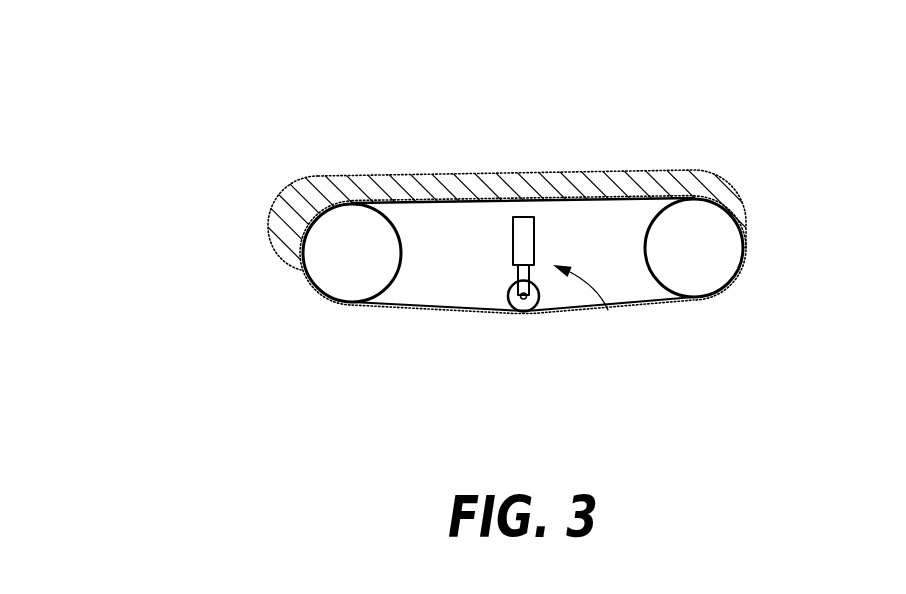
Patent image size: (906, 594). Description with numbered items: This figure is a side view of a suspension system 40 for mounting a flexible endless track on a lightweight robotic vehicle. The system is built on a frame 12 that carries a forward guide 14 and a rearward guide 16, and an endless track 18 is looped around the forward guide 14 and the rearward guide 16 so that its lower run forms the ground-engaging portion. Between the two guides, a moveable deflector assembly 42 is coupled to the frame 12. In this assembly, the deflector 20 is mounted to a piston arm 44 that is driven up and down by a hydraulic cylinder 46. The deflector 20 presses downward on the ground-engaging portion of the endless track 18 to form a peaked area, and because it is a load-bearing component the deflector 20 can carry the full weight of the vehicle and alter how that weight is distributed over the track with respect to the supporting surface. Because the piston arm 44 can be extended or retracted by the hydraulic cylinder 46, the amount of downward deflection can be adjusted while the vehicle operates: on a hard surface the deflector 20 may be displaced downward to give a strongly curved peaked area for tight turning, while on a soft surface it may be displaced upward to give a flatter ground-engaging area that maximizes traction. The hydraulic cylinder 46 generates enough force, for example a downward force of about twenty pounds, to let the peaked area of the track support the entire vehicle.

The suspension system 40 is at (150, 55).
The frame 12 is at (420, 215).
The endless track 18 is at (643, 177).
The forward guide 14 is at (330, 273).
The rearward guide 16 is at (712, 268).
The deflector 20 is at (516, 301).
The piston arm 44 is at (523, 270).
The hydraulic cylinder 46 is at (517, 242).
The moveable deflector assembly 42 is at (608, 310).